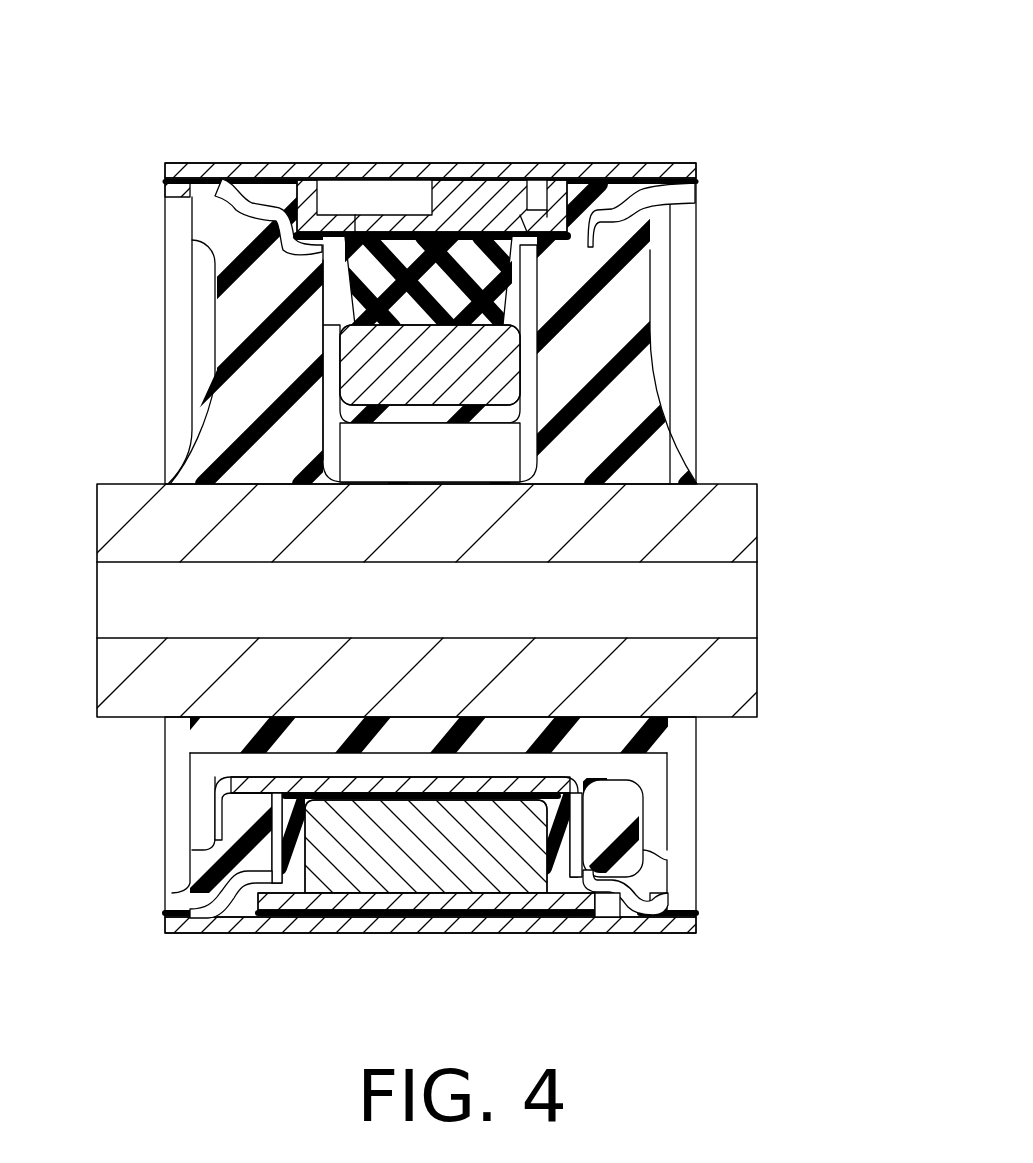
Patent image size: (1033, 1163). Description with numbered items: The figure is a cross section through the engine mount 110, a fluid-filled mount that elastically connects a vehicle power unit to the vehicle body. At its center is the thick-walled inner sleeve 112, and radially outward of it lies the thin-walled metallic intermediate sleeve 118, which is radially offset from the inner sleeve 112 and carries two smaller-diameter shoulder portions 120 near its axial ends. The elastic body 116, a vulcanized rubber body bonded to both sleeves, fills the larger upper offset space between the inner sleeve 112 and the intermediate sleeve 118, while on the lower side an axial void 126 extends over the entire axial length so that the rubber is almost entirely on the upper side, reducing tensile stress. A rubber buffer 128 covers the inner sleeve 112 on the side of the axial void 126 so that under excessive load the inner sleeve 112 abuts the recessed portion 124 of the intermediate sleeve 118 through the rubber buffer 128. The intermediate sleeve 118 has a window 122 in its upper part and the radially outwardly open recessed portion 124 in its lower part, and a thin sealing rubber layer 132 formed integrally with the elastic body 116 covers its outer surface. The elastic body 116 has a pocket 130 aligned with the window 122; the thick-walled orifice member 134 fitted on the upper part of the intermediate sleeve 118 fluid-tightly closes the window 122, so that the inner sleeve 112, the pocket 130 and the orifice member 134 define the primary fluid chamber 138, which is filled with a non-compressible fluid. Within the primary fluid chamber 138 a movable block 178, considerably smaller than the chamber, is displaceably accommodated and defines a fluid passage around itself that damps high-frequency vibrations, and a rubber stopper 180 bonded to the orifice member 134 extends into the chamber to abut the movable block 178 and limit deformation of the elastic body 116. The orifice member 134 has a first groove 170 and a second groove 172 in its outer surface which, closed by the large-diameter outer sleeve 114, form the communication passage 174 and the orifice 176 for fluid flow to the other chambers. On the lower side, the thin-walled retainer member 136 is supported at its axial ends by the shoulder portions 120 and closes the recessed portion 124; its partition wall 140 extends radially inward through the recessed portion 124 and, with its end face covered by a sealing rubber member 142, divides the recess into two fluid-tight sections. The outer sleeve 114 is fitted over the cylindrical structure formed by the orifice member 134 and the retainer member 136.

The engine mount 110 is at (196, 108).
The inner sleeve 112 is at (725, 520).
The outer sleeve 114 is at (387, 918).
The elastic body 116 is at (245, 318).
The intermediate sleeve 118 is at (665, 166).
The shoulder portions 120 is at (283, 196).
The window 122 is at (362, 228).
The recessed portion 124 is at (493, 787).
The axial void 126 is at (292, 765).
The rubber buffer 128 is at (383, 740).
The pocket 130 is at (525, 432).
The sealing rubber layer 132 is at (620, 910).
The orifice member 134 is at (481, 190).
The retainer member 136 is at (468, 900).
The primary fluid chamber 138 is at (322, 326).
The partition wall 140 is at (532, 832).
The sealing rubber member 142 is at (297, 827).
The first groove 170 is at (530, 178).
The second groove 172 is at (405, 178).
The communication passage 174 is at (548, 217).
The orifice 176 is at (322, 192).
The movable block 178 is at (492, 340).
The rubber stopper 180 is at (378, 283).